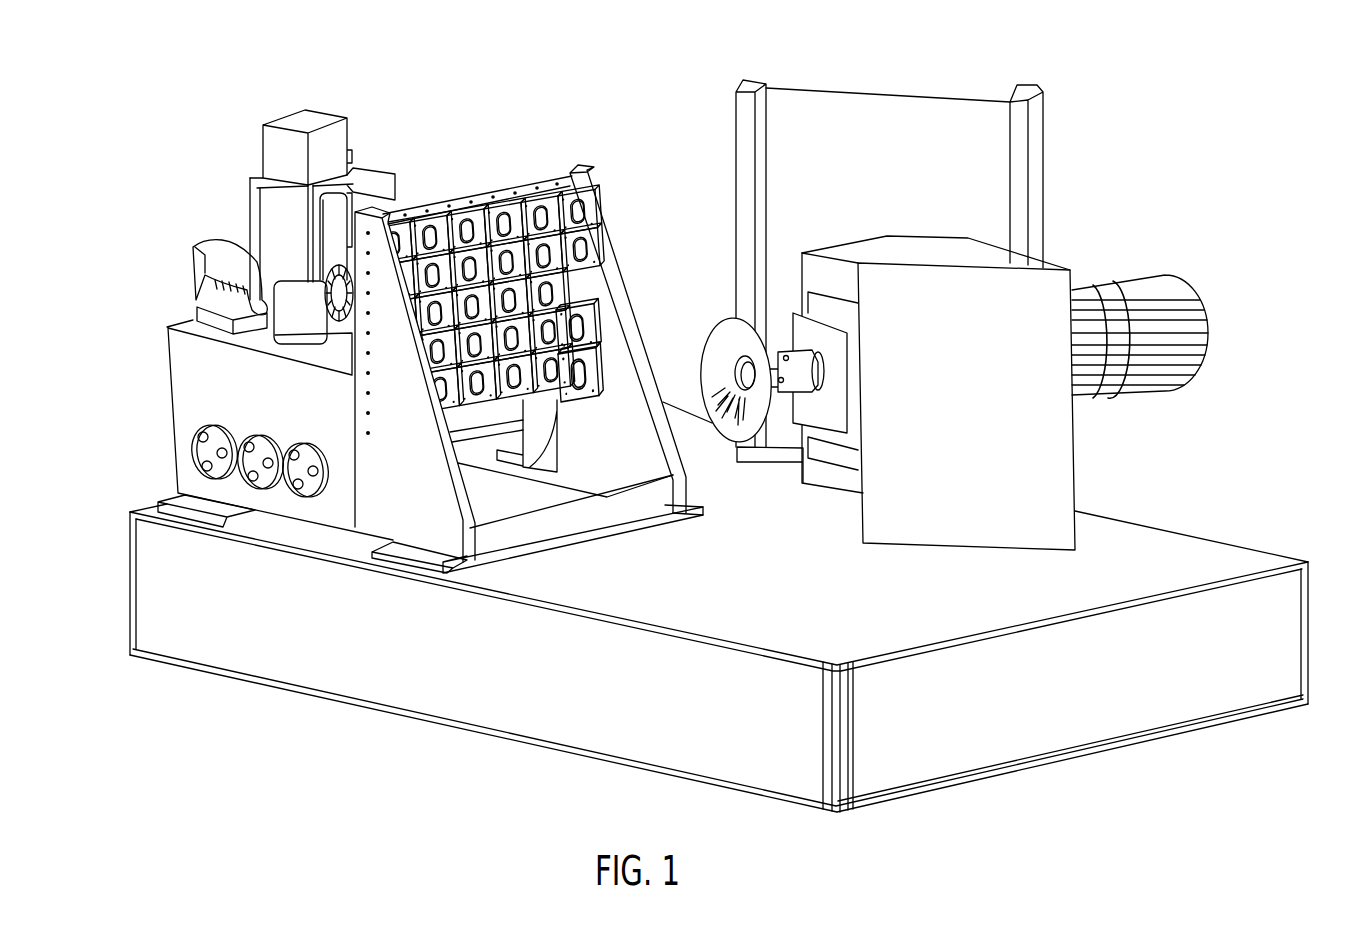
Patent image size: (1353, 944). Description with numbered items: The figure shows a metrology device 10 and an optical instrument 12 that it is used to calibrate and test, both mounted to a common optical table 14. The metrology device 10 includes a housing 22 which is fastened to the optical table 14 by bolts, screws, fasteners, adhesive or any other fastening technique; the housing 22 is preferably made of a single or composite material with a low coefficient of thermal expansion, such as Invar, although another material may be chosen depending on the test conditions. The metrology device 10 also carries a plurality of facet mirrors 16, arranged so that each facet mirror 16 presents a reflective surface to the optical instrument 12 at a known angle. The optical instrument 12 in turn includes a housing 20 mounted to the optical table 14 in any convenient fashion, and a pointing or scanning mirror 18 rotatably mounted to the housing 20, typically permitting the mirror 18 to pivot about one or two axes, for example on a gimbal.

The metrology device 10 is at (423, 124).
The optical instrument 12 is at (926, 72).
The optical table 14 is at (500, 693).
The facet mirrors 16 is at (562, 259).
The scanning mirror 18 is at (699, 376).
The housing 20 is at (900, 523).
The housing 22 is at (582, 517).